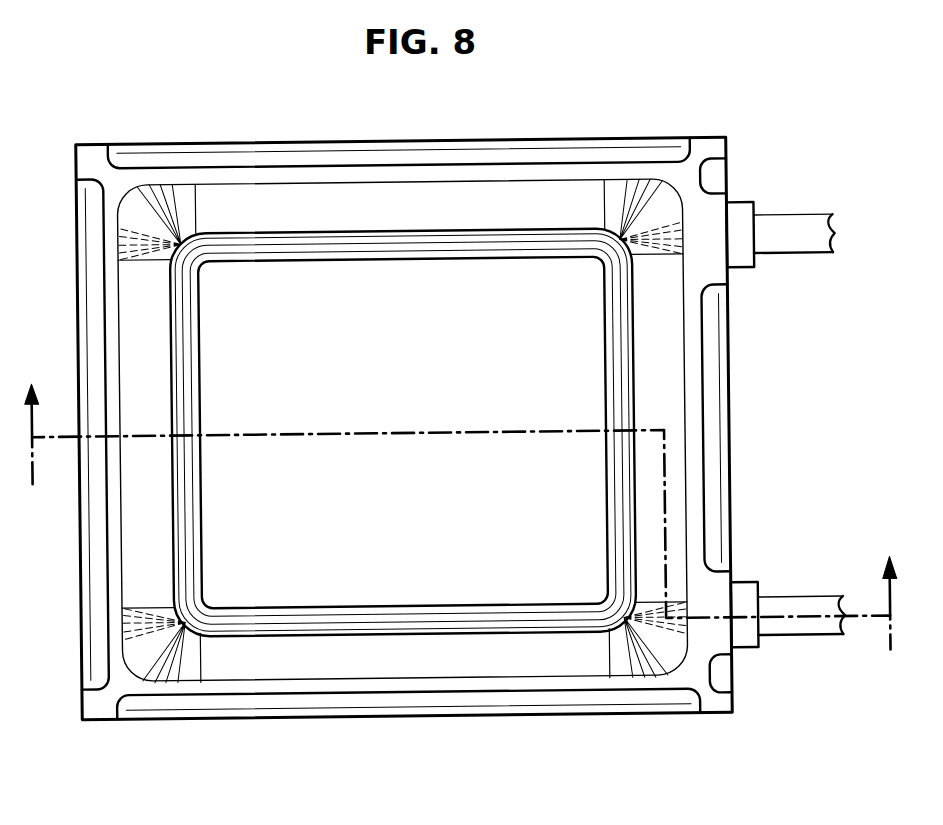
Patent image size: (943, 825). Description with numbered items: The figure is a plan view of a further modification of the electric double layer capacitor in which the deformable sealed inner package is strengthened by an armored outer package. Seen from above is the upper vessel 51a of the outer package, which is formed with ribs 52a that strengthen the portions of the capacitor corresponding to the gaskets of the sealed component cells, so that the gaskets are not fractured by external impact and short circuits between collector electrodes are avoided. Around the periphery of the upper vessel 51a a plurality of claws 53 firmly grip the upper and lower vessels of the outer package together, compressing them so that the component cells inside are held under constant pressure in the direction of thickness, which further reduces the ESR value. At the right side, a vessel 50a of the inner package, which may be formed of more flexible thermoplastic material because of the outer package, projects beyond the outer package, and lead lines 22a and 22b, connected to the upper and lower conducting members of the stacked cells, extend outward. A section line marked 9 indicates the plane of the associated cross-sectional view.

The claws 53 is at (418, 147).
The ribs 52a is at (430, 250).
The upper vessel 51a is at (423, 393).
The vessel of the inner package 50a is at (738, 257).
The lead line 22a is at (797, 218).
The lead line 22b is at (801, 597).
The section line 9- 9 is at (460, 505).